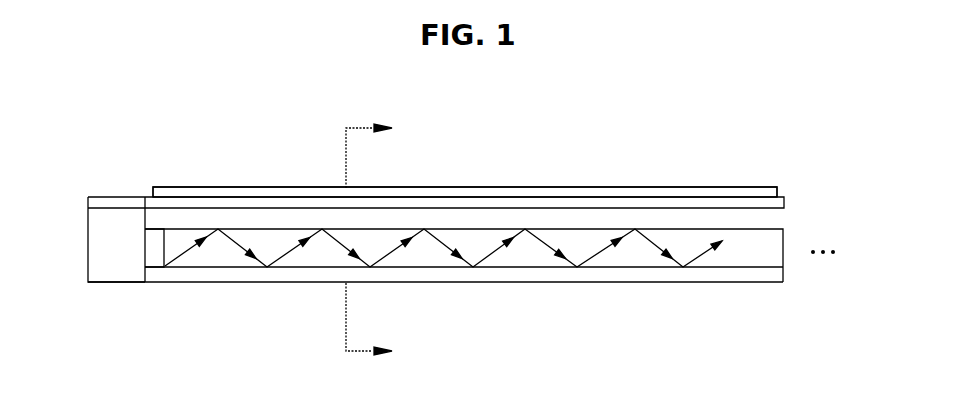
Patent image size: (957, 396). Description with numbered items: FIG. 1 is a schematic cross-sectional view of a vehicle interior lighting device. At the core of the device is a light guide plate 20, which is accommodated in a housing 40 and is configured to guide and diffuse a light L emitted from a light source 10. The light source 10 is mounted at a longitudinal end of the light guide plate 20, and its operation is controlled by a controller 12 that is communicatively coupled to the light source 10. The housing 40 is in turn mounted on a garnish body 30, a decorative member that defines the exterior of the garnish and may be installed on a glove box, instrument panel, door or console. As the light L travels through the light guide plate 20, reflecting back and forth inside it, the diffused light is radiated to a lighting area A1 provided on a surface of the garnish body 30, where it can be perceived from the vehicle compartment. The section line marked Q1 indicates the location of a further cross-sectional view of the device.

The controller 12 is at (117, 265).
The light source 10 is at (153, 260).
The light guide plate 20 is at (747, 250).
The garnish body 30 is at (731, 208).
The housing 40 is at (533, 278).
The lighting area A1 is at (469, 195).
The light L is at (550, 243).
The section line Q1 is at (387, 241).